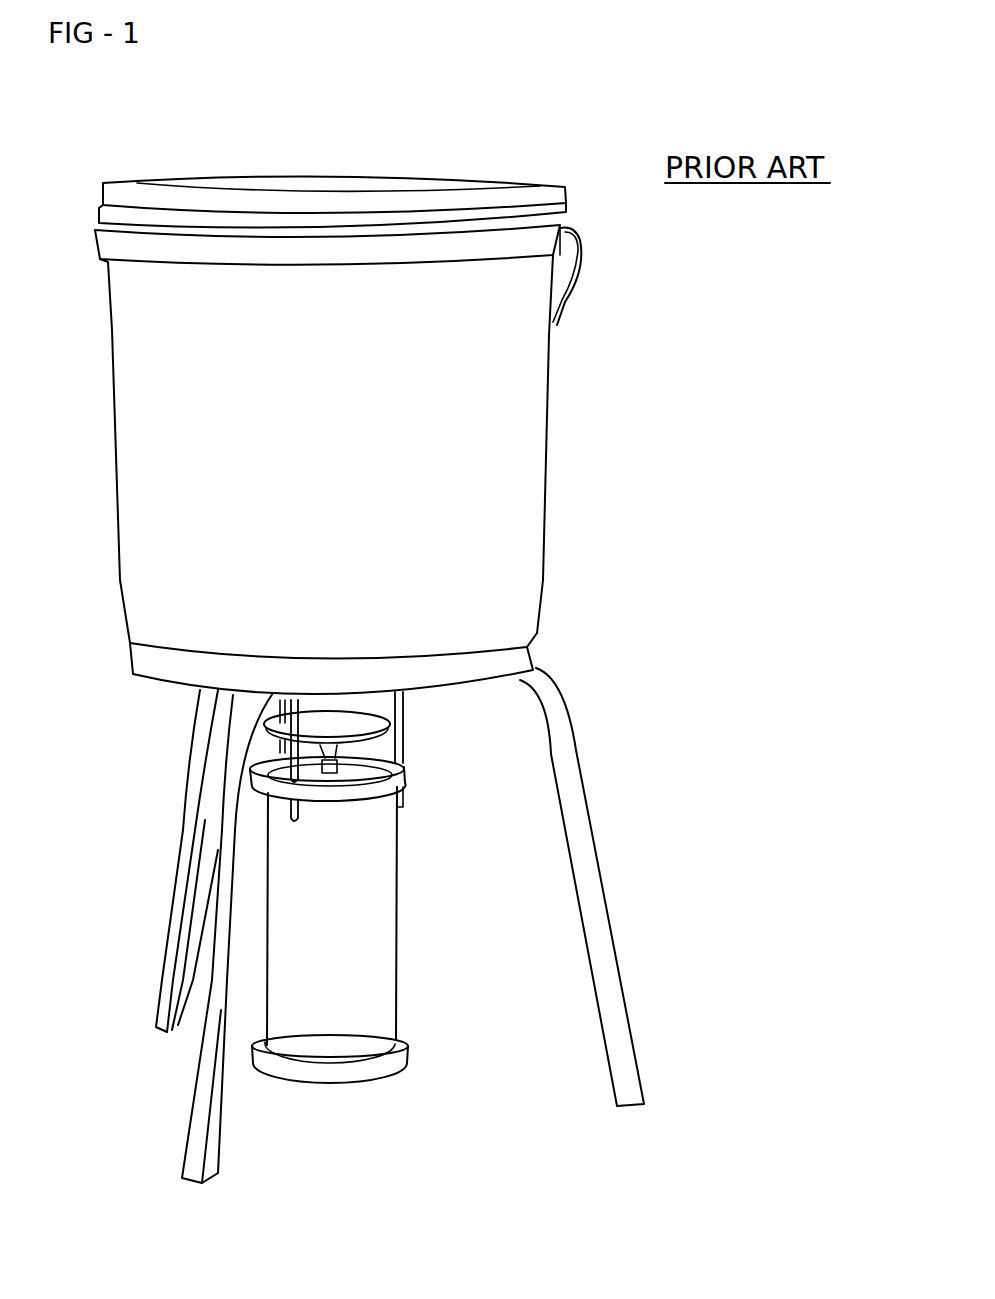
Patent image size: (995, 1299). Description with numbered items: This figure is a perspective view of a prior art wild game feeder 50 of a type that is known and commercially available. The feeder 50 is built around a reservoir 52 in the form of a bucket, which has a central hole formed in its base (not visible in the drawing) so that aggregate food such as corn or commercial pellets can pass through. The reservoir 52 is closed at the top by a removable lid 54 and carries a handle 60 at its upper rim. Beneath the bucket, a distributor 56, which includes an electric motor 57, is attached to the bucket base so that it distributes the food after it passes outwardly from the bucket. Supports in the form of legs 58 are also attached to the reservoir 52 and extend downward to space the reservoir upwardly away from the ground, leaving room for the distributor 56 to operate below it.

The wild game feeder 50 is at (682, 453).
The reservoir 52 is at (343, 463).
The removable lid 54 is at (372, 167).
The distributor 56 is at (410, 885).
The electric motor 57 is at (311, 917).
The legs 58 is at (591, 818).
The handle 60 is at (577, 300).